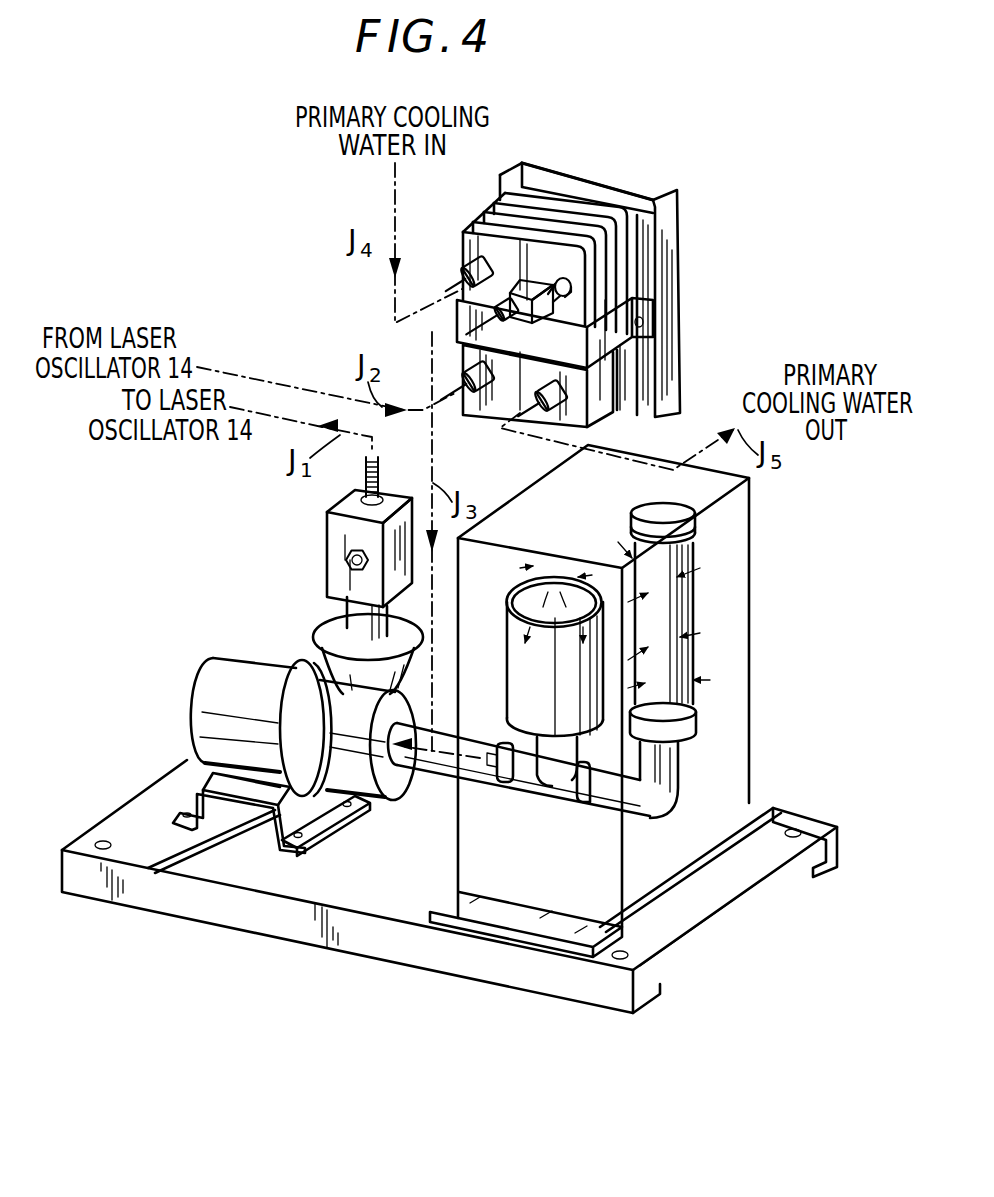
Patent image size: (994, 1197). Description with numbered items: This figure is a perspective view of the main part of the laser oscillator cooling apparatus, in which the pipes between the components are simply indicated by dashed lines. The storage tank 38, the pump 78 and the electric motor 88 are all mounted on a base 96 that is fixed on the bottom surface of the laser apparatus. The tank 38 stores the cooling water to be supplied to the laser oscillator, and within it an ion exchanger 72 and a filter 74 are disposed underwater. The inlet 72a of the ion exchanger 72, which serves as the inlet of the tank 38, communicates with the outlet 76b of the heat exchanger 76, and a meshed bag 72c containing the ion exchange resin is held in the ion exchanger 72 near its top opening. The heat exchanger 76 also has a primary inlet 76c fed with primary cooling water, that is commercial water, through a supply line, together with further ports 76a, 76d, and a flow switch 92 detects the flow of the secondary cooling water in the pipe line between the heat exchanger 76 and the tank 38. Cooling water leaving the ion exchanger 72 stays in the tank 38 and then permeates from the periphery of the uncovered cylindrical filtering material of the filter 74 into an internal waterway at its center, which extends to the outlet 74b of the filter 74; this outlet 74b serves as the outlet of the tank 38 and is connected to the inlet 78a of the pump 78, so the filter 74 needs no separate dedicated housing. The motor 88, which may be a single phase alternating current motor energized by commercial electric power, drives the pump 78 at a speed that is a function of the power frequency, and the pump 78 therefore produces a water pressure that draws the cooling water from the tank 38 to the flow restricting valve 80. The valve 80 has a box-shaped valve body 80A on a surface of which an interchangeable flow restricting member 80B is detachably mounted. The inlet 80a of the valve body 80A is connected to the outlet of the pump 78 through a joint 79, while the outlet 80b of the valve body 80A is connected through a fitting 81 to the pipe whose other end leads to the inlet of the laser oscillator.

The storage tank 38 is at (750, 527).
The ion exchanger 72 is at (533, 646).
The inlet of the ion exchanger 72a is at (490, 767).
The meshed bag 72c is at (555, 595).
The filter 74 is at (693, 597).
The outlet of the filter 74b is at (585, 812).
The heat exchanger 76 is at (655, 257).
The heat exchanger port 76a is at (483, 398).
The outlet of the heat exchanger 76b is at (563, 280).
The primary inlet of the heat exchanger 76c is at (468, 267).
The heat exchanger port 76d is at (567, 400).
The pump 78 is at (342, 787).
The inlet of the pump 78a is at (392, 762).
The joint 79 is at (358, 622).
The flow restricting valve 80 is at (329, 545).
The valve body 80A is at (332, 520).
The flow restricting member 80B is at (345, 558).
The inlet of the valve body 80a is at (342, 613).
The outlet of the valve body 80b is at (351, 477).
The fitting 81 is at (380, 467).
The electric motor 88 is at (242, 665).
The flow switch 92 is at (525, 292).
The base 96 is at (285, 923).